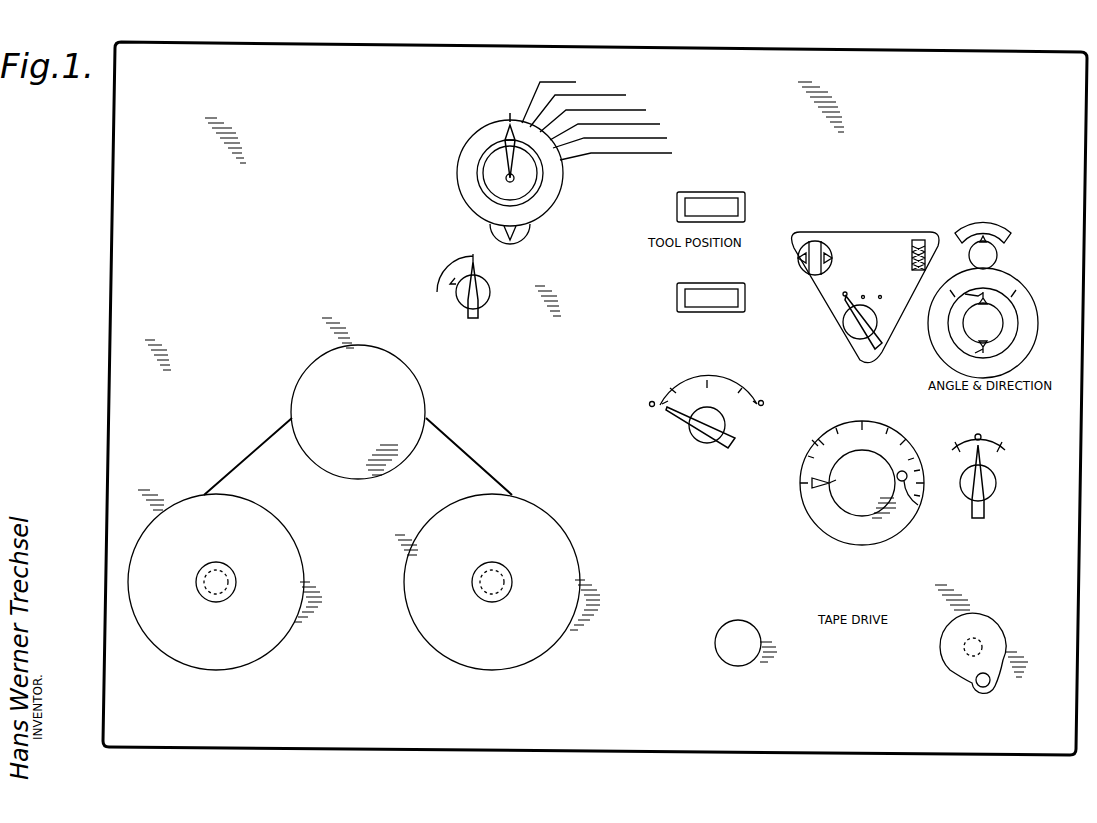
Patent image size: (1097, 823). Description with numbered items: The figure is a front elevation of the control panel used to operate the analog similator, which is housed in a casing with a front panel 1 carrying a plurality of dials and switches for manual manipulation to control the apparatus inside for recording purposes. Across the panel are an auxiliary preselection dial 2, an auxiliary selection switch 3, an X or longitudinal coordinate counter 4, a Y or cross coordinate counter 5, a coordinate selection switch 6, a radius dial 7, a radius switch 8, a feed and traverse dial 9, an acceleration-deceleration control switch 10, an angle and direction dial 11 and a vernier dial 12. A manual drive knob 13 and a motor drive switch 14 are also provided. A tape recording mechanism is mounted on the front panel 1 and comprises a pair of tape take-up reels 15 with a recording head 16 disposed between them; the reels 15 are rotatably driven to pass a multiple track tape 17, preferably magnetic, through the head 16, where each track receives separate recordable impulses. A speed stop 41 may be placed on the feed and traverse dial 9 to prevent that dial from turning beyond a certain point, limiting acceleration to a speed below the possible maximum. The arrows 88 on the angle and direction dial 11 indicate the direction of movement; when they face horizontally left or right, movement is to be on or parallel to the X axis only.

The front panel 1 is at (110, 286).
The auxiliary preselection dial 2 is at (450, 149).
The auxiliary selection switch 3 is at (426, 294).
The X or longitudinal coordinate counter 4 is at (664, 299).
The Y or cross coordinate counter 5 is at (664, 209).
The coordinate selection switch 6 is at (673, 443).
The radius dial 7 is at (873, 233).
The radius switch 8 is at (856, 347).
The feed and traverse dial 9 is at (797, 509).
The acceleration-deceleration control switch 10 is at (1006, 493).
The angle and direction dial 11 is at (1031, 287).
The vernier dial 12 is at (1022, 233).
The manual drive knob 13 is at (967, 689).
The motor drive switch 14 is at (754, 619).
The tape take-up reels 15 is at (268, 660).
The recording head 16 is at (322, 356).
The multiple track tape 17 is at (255, 442).
The speed stop 41 is at (921, 493).
The arrows 88 is at (977, 288).